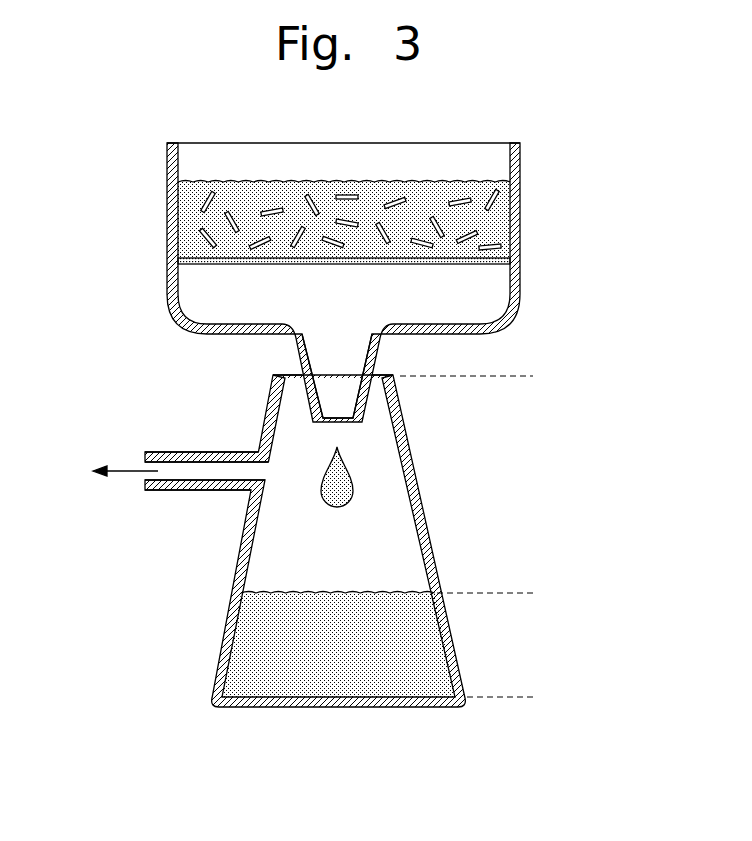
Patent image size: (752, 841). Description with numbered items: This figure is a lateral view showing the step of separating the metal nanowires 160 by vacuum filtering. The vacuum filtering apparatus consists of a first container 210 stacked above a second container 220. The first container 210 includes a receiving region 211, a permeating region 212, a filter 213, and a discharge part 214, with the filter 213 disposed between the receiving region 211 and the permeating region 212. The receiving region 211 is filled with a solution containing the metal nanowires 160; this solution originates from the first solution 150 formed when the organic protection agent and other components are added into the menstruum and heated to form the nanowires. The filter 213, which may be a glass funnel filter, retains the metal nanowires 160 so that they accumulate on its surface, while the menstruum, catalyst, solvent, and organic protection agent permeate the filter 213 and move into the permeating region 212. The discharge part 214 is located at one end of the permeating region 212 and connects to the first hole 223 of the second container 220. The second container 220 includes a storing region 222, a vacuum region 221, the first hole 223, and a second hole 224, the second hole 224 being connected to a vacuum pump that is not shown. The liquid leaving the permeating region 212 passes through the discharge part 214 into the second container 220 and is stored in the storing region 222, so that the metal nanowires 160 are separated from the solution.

The first solution 150 is at (195, 238).
The metal nanowire 160 is at (206, 205).
The first container 210 is at (168, 161).
The receiving region 211 is at (522, 143).
The permeating region 212 is at (522, 262).
The filter 213 is at (190, 264).
The discharge part 214 is at (298, 352).
The second container 220 is at (220, 645).
The vacuum region 221 is at (522, 376).
The storing region 222 is at (522, 593).
The first hole 223 is at (294, 374).
The second hole 224 is at (187, 470).